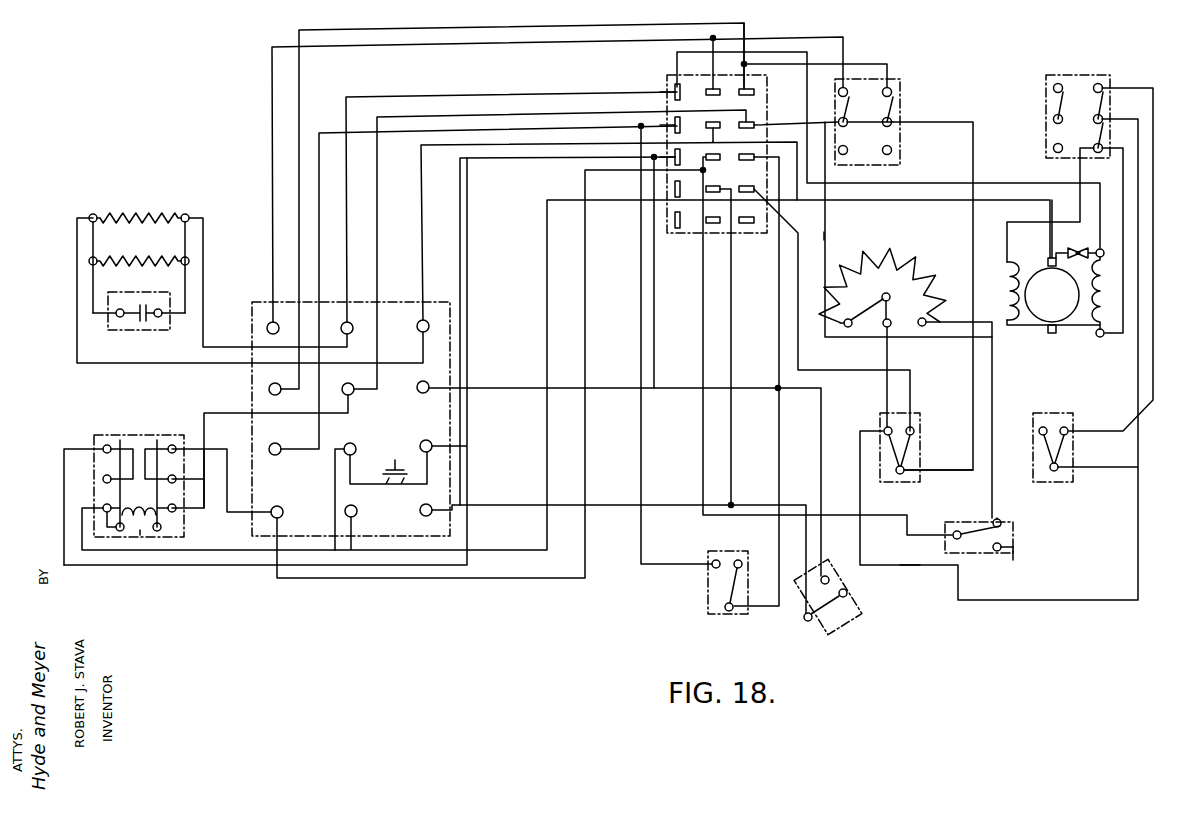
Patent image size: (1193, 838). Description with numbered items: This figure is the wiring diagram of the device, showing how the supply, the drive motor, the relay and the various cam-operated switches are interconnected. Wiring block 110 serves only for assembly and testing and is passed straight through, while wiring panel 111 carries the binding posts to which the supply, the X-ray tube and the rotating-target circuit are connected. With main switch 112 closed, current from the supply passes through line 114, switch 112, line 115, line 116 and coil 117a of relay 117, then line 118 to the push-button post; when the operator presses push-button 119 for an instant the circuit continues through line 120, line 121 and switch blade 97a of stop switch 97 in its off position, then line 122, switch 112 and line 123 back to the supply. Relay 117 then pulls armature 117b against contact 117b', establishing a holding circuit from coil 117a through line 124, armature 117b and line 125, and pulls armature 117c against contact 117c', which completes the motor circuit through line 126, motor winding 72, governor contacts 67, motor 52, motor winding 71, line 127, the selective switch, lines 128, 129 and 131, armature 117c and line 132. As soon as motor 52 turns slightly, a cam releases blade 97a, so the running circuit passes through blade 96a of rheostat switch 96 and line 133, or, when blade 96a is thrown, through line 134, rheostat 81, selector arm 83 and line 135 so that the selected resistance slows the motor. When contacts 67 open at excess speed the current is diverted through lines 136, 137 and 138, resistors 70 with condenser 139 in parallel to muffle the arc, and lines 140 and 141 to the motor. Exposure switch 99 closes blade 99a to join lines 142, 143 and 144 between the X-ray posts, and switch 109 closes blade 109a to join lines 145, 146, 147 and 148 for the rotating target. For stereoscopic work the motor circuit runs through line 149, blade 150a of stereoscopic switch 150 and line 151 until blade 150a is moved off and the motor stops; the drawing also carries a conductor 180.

The motor 52 is at (1040, 262).
The governor contacts 67 is at (1078, 250).
The resistors 70 is at (146, 226).
The motor winding 71 is at (1003, 300).
The motor winding 72 is at (1093, 322).
The rheostat 81 is at (882, 281).
The selector arm 83 is at (867, 301).
The rheostat switch 96 is at (1014, 558).
The rheostat switch blade 96a is at (971, 541).
The stop switch 97 is at (914, 426).
The switch blade 97a is at (903, 460).
The exposure switch 99 is at (798, 620).
The exposure switch blade 99a is at (830, 610).
The switch 109 is at (708, 578).
The switch blade 109a is at (727, 594).
The wiring block 110 is at (660, 88).
The wiring panel 111 is at (256, 306).
The main switch 112 is at (893, 82).
The line 114 is at (272, 73).
The line 115 is at (378, 225).
The line 116 is at (236, 412).
The relay 117 is at (115, 437).
The relay coil 117a is at (134, 530).
The armature 117b is at (76, 483).
The contact 117b' is at (72, 425).
The armature 117c is at (192, 476).
The contact 117c' is at (154, 421).
The line 118 is at (1088, 78).
The push-button 119 is at (393, 465).
The line 120 is at (460, 258).
The line 121 is at (654, 250).
The line 122 is at (973, 148).
The line 123 is at (299, 88).
The line 124 is at (104, 517).
The line 125 is at (243, 566).
The line 126 is at (825, 235).
The line 127 is at (1080, 171).
The line 128 is at (1138, 362).
The line 129 is at (829, 514).
The line 131 is at (230, 494).
The line 132 is at (148, 535).
The line 133 is at (918, 565).
The line 134 is at (992, 400).
The line 135 is at (887, 352).
The line 136 is at (965, 183).
The line 137 is at (412, 98).
The line 138 is at (204, 275).
The condenser 139 is at (148, 292).
The line 140 is at (77, 297).
The line 141 is at (467, 244).
The line 142 is at (547, 332).
The line 143 is at (821, 412).
The line 144 is at (676, 505).
The line 145 is at (319, 172).
The line 146 is at (641, 412).
The line 147 is at (731, 412).
The line 148 is at (528, 390).
The line 149 is at (1123, 343).
The stereoscopic switch 150 is at (1055, 413).
The stereoscopic switch blade 150a is at (1058, 459).
The line 151 is at (1153, 404).
The conductor 180 is at (585, 283).